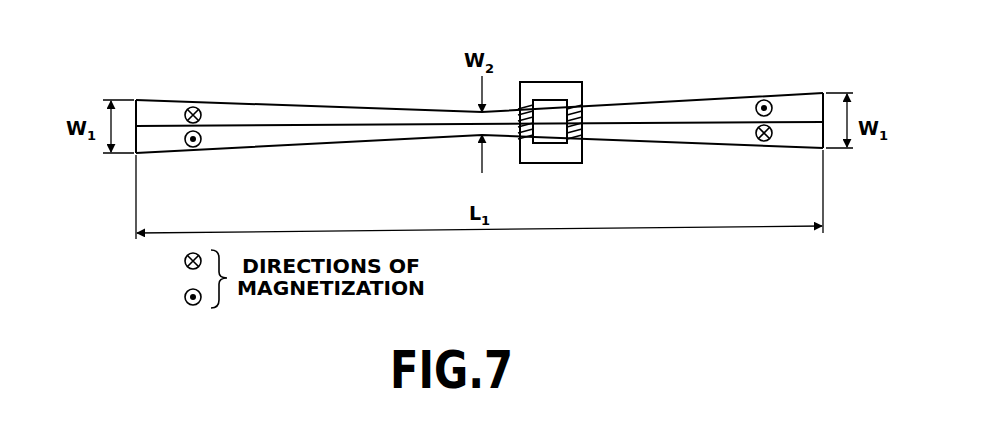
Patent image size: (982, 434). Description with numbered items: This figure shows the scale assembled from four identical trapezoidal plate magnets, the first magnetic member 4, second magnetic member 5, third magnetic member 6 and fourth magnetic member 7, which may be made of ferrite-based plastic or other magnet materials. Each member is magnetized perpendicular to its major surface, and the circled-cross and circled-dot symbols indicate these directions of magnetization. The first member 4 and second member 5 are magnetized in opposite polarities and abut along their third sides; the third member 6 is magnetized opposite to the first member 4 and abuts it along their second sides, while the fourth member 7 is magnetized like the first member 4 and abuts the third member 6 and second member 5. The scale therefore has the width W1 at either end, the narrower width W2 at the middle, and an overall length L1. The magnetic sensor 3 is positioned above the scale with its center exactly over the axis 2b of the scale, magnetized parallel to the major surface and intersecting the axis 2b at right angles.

The axis of the scale 2b is at (635, 121).
The magnetic sensor 3 is at (547, 82).
The first magnetic member 4 is at (323, 107).
The second magnetic member 5 is at (330, 145).
The third magnetic member 6 is at (698, 100).
The fourth magnetic member 7 is at (702, 147).